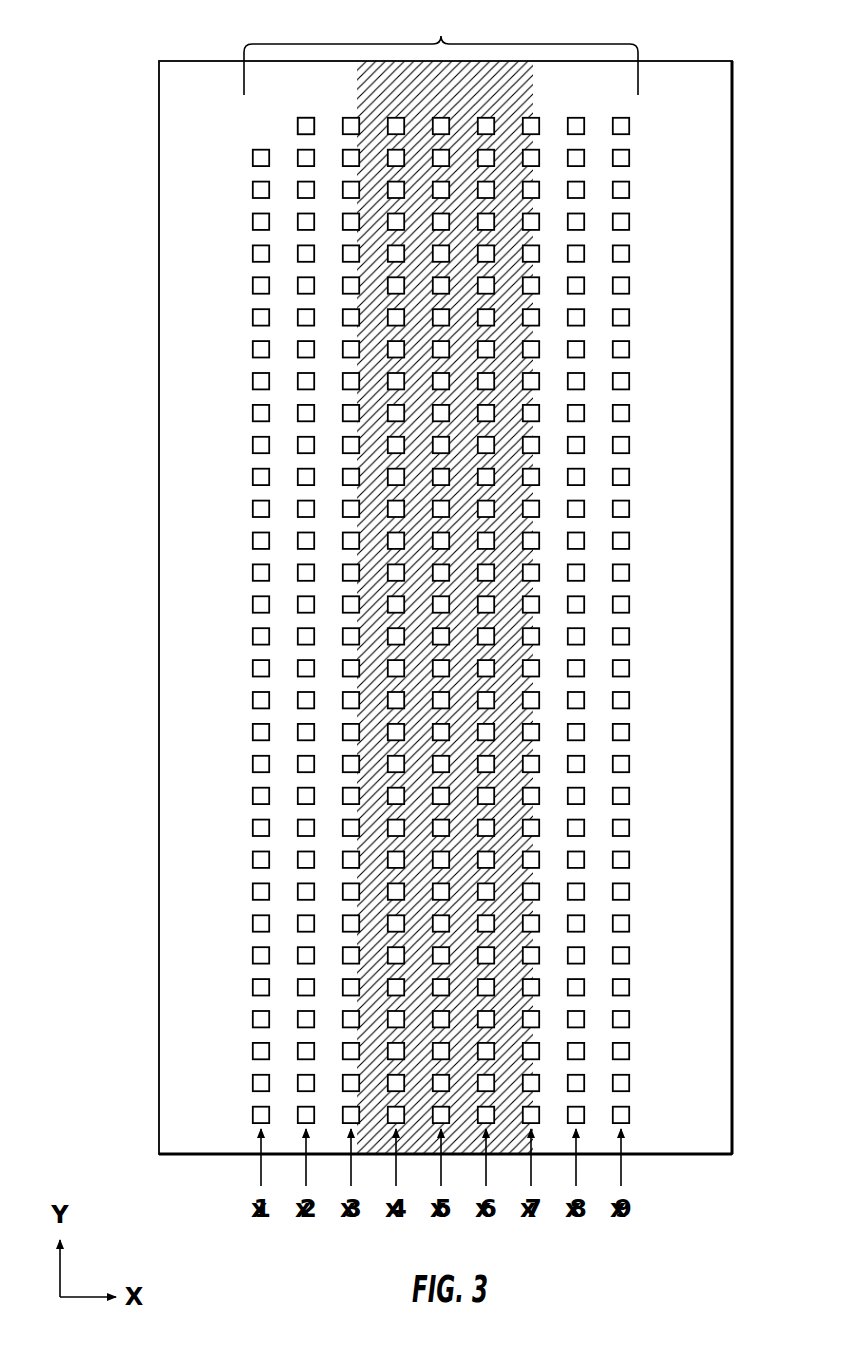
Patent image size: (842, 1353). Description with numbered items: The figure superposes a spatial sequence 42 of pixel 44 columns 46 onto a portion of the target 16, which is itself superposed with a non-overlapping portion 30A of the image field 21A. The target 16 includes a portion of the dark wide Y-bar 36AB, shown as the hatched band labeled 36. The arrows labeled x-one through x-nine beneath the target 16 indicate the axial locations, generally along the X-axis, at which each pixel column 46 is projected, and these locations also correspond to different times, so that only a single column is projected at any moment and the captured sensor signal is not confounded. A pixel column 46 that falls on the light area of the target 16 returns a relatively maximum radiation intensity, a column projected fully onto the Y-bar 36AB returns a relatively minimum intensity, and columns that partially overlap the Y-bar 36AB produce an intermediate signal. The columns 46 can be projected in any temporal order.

The target 16 is at (696, 61).
The image field 21A is at (192, 318).
The non-overlapping portion 30A is at (192, 413).
The hatched region 36 is at (510, 460).
The wide Y-bar 36AB is at (377, 557).
The spatial sequence 42 is at (441, 48).
The pixel 44 is at (253, 670).
The pixel column 46 is at (305, 108).